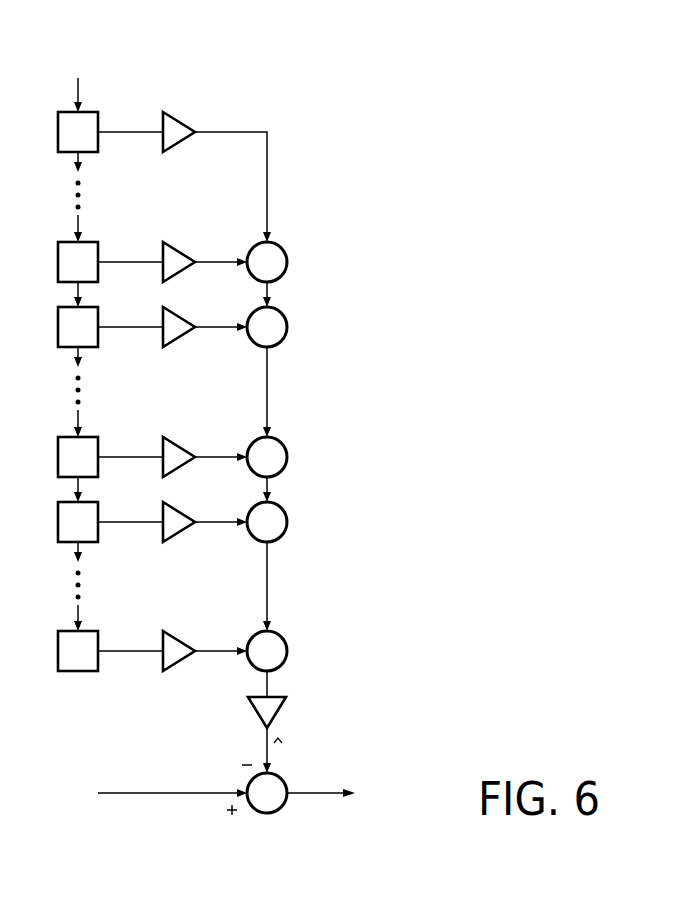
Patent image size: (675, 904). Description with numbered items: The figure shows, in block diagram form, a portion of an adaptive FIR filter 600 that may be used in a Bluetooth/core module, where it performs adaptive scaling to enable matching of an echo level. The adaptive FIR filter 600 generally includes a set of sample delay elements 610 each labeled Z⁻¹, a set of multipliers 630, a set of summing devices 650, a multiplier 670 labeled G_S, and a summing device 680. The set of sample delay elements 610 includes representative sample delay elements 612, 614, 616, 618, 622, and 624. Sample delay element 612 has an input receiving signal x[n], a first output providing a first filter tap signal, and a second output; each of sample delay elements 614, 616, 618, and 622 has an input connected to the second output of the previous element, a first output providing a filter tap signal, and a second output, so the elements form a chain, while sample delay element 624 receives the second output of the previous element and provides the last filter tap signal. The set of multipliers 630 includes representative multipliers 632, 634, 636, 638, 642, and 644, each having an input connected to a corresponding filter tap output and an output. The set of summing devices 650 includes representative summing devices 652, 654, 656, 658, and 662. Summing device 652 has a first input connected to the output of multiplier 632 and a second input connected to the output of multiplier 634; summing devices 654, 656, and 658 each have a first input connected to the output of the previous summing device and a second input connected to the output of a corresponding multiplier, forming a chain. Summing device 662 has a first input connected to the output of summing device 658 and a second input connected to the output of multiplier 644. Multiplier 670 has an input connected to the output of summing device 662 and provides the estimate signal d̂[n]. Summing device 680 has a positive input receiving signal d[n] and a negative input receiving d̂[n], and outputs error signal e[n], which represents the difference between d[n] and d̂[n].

The adaptive FIR filter 600 is at (556, 760).
The set of sample delay elements 610 is at (75, 40).
The sample delay element 612 is at (58, 127).
The sample delay element 614 is at (58, 257).
The sample delay element 616 is at (58, 322).
The sample delay element 618 is at (58, 452).
The sample delay element 622 is at (58, 517).
The sample delay element 624 is at (58, 646).
The set of multipliers 630 is at (173, 55).
The multiplier 632 is at (180, 121).
The multiplier 634 is at (180, 251).
The multiplier 636 is at (176, 342).
The multiplier 638 is at (180, 446).
The multiplier 642 is at (176, 537).
The multiplier 644 is at (180, 639).
The set of summing devices 650 is at (263, 68).
The summing device 652 is at (287, 262).
The summing device 654 is at (287, 327).
The summing device 656 is at (287, 457).
The summing device 658 is at (287, 522).
The summing device 662 is at (287, 651).
The multiplier 670 is at (257, 713).
The summing device 680 is at (253, 780).